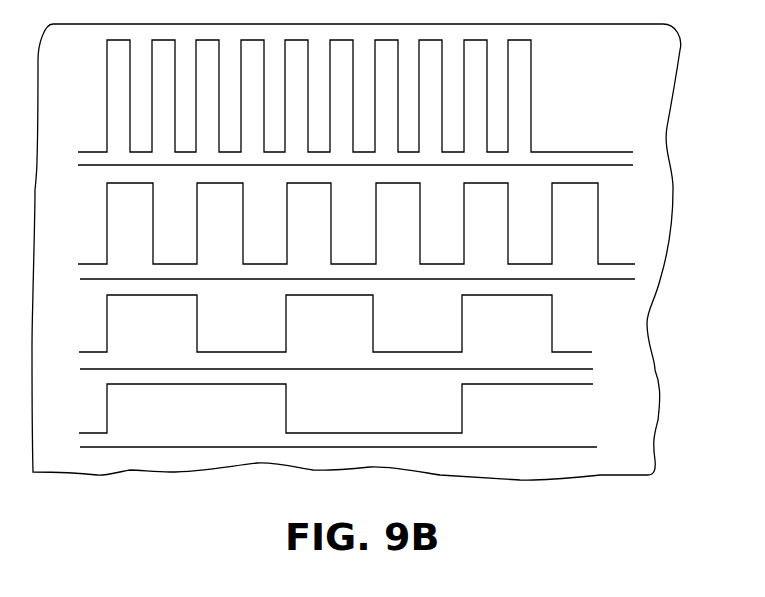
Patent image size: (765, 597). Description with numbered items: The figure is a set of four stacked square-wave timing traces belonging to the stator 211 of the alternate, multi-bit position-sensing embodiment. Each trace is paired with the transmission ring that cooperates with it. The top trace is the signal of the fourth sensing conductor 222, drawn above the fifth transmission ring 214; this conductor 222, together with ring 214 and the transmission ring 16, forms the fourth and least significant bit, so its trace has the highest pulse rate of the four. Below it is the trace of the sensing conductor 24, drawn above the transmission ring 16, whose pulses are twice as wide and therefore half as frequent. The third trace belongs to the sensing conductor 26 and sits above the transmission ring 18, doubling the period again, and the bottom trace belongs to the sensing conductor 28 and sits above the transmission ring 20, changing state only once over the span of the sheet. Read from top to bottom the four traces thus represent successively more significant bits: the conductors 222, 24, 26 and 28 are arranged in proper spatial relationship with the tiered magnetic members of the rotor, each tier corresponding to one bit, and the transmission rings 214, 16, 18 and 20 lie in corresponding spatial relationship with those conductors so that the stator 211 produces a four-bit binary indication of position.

The stator 211 is at (131, 470).
The fourth sensing conductor 222 is at (104, 79).
The fifth transmission ring 214 is at (92, 166).
The sensing conductor 24 is at (103, 210).
The transmission ring 16 is at (86, 279).
The sensing conductor 26 is at (102, 321).
The transmission ring 18 is at (85, 369).
The sensing conductor 28 is at (102, 403).
The transmission ring 20 is at (93, 447).